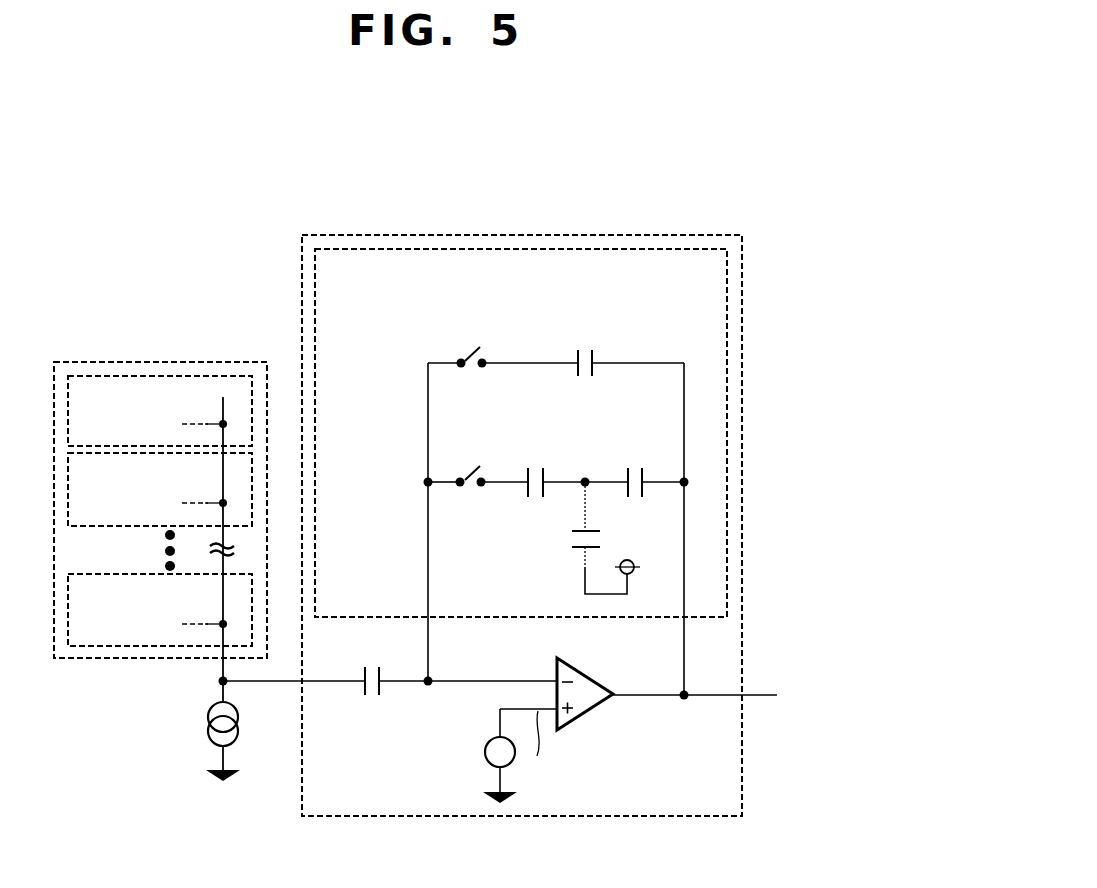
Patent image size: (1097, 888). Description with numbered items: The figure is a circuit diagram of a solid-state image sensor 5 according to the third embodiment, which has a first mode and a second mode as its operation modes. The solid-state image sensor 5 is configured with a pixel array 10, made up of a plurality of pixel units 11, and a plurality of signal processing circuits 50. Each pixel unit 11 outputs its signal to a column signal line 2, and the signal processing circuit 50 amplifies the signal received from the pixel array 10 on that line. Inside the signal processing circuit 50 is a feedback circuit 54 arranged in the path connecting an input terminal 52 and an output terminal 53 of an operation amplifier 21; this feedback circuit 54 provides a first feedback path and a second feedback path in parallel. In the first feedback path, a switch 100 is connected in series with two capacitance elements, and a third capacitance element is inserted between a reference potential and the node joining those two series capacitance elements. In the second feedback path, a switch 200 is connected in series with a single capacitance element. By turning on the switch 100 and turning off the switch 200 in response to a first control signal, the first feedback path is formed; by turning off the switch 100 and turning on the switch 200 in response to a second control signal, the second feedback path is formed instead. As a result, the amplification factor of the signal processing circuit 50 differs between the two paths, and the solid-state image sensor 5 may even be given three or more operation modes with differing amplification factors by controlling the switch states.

The solid-state image sensor 5 is at (727, 172).
The pixel array 10 is at (108, 376).
The pixel unit 11 is at (242, 452).
The column signal line 2 is at (220, 681).
The signal processing circuit 50 is at (742, 278).
The feedback circuit 54 is at (727, 352).
The switch 200 is at (472, 354).
The switch 100 is at (472, 474).
The operation amplifier 21 is at (588, 673).
The input terminal 52 is at (443, 684).
The output terminal 53 is at (648, 698).